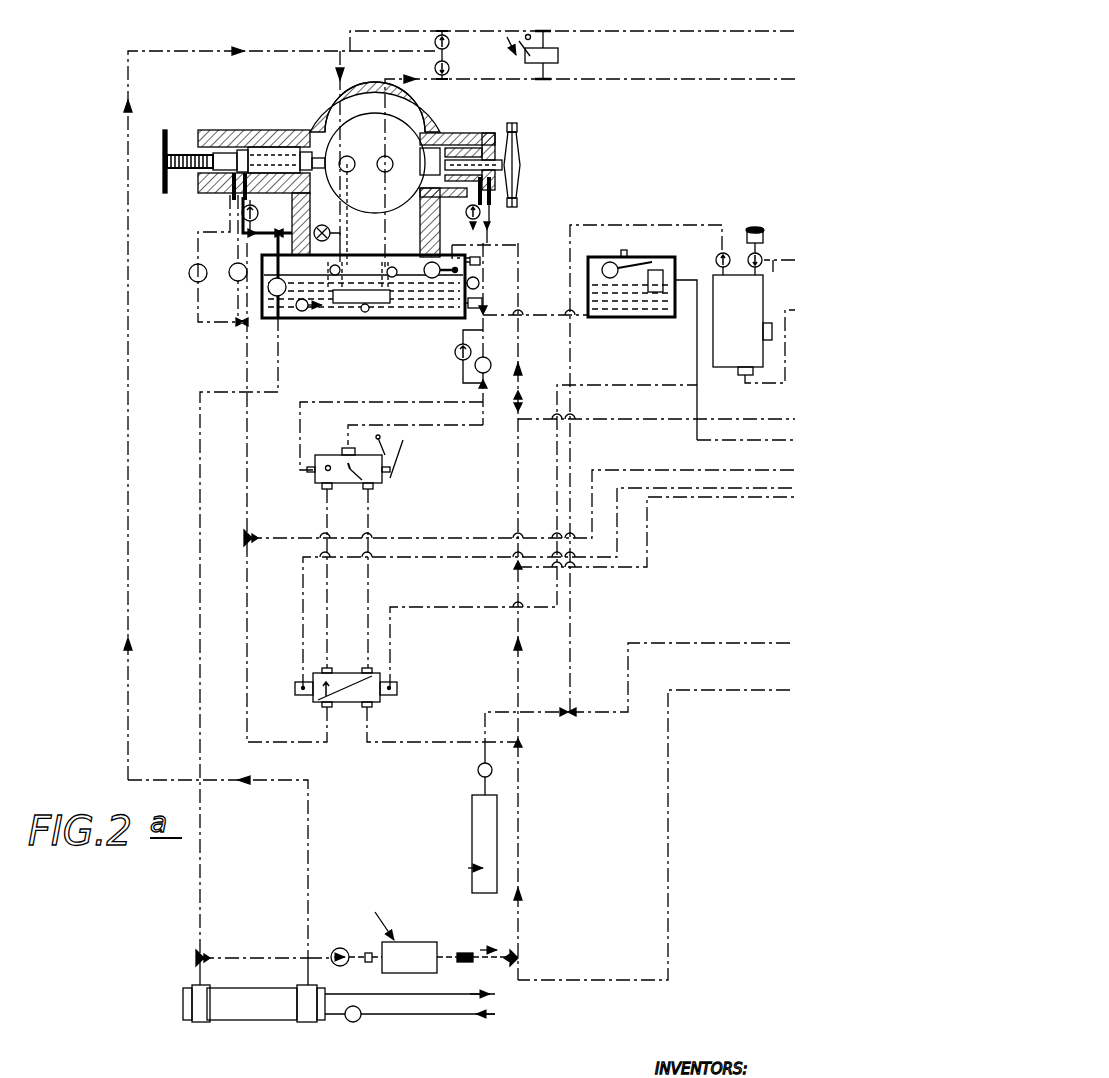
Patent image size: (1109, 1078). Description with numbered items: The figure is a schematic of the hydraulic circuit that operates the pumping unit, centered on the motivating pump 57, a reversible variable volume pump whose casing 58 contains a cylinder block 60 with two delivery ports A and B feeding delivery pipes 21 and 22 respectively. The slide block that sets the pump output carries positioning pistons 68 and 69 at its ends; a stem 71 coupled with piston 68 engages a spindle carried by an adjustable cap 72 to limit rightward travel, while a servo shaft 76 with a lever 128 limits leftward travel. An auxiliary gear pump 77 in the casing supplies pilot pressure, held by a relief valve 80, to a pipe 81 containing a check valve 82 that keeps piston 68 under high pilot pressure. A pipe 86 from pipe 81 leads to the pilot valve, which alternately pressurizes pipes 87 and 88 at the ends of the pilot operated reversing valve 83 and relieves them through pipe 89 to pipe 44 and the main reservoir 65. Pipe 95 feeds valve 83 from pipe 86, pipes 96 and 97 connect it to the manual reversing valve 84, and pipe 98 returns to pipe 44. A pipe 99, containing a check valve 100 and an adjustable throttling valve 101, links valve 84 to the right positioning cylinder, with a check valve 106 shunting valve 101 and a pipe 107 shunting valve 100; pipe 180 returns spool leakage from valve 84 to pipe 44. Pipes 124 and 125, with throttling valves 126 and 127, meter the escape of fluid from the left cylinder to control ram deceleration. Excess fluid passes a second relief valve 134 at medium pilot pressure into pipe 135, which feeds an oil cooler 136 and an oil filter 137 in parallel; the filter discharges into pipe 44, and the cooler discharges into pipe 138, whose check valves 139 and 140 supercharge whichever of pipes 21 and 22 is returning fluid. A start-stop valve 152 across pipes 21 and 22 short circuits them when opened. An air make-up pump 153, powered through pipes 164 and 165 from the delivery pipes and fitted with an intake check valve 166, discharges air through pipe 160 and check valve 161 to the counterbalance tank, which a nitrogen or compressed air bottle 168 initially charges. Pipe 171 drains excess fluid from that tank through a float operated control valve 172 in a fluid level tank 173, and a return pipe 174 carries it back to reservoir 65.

The delivery pipe 21 is at (700, 80).
The delivery pipe 22 is at (698, 33).
The pipe 44 is at (518, 472).
The motivating pump 57 is at (333, 104).
The casing 58 is at (420, 118).
The cylinder block 60 is at (376, 200).
The main reservoir 65 is at (350, 318).
The positioning piston 68 is at (300, 146).
The positioning piston 69 is at (470, 146).
The stem 71 is at (262, 150).
The cap 72 is at (180, 152).
The servo shaft 76 is at (503, 165).
The auxiliary gear pump 77 is at (330, 230).
The relief valve 80 is at (275, 318).
The pipe 81 is at (267, 225).
The check valve 82 is at (264, 216).
The pilot operated reversing valve 83 is at (344, 672).
The manual reversing valve 84 is at (315, 478).
The pipe 86 is at (462, 530).
The pipe 87 is at (632, 392).
The pipe 88 is at (462, 558).
The pipe 89 is at (630, 419).
The pipe 95 is at (247, 720).
The pipe 96 is at (327, 578).
The pipe 97 is at (368, 578).
The pipe 98 is at (436, 742).
The pipe 99 is at (445, 426).
The check valve 100 is at (467, 217).
The adjustable throttling valve 101 is at (491, 362).
The check valve 106 is at (455, 352).
The pipe 107 is at (492, 213).
The pipe 124 is at (238, 300).
The pipe 125 is at (212, 232).
The adjustable throttling valve 126 is at (232, 266).
The adjustable throttling valve 127 is at (190, 268).
The lever 128 is at (516, 140).
The relief valve 134 is at (308, 312).
The pipe 135 is at (200, 500).
The oil cooler 136 is at (258, 1020).
The oil filter 137 is at (428, 930).
The pipe 138 is at (192, 52).
The check valve 139 is at (449, 70).
The check valve 140 is at (449, 44).
The start-stop valve 152 is at (559, 52).
The air make-up pump 153 is at (750, 308).
The pipe 160 is at (630, 225).
The check valve 161 is at (725, 252).
The pipe 164 is at (750, 358).
The pipe 165 is at (750, 333).
The check valve 166 is at (760, 248).
The nitrogen or compressed air bottle 168 is at (472, 838).
The pipe 171 is at (697, 405).
The float operated control valve 172 is at (660, 265).
The fluid level tank 173 is at (632, 318).
The return pipe 174 is at (553, 314).
The pipe 180 is at (316, 404).
The delivery port A is at (389, 152).
The delivery port B is at (351, 152).